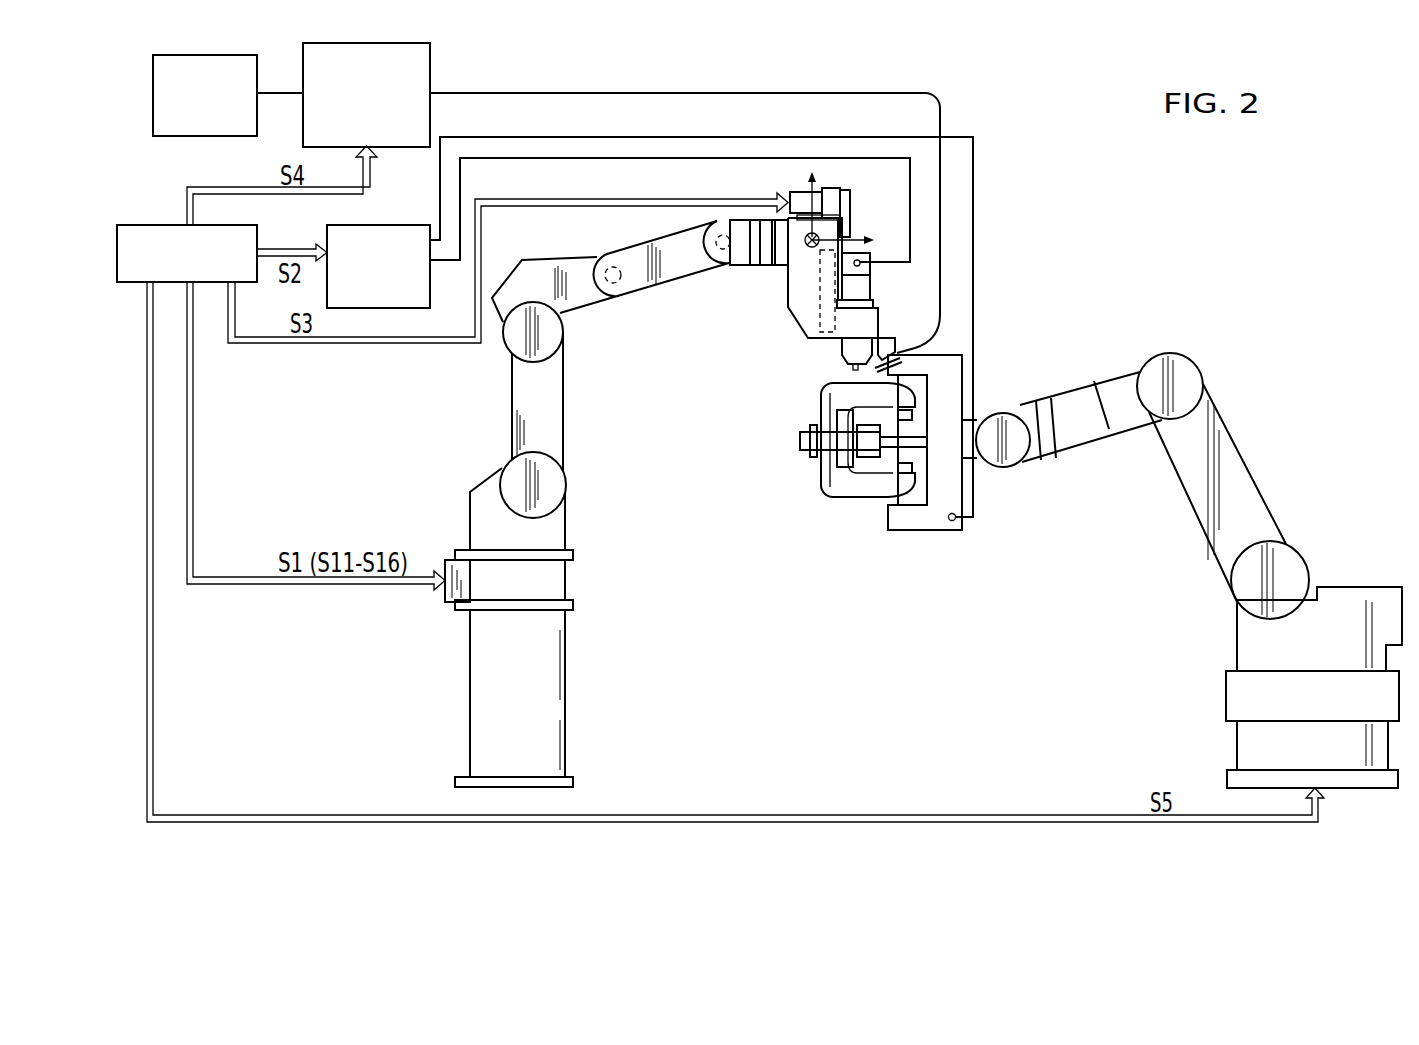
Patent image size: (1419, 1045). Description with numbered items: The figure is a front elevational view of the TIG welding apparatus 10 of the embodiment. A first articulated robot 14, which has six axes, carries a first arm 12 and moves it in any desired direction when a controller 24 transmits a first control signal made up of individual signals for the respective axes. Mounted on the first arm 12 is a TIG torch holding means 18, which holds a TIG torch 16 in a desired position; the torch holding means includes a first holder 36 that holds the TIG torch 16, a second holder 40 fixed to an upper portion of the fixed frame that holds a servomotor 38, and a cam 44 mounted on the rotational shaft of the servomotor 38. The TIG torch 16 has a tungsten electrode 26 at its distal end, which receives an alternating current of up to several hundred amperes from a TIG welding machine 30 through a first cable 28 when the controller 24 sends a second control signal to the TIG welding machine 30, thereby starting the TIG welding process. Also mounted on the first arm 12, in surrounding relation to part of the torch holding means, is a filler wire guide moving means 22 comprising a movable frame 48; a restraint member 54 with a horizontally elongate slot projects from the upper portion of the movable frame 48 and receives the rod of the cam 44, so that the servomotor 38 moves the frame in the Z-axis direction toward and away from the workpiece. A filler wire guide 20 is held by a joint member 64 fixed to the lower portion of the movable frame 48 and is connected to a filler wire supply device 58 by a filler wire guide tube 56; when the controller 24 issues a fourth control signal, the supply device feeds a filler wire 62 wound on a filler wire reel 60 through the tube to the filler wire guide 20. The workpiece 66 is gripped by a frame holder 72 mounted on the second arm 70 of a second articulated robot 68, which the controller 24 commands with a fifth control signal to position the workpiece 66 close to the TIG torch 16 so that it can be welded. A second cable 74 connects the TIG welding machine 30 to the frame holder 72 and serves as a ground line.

The TIG welding apparatus 10 is at (1108, 171).
The first arm 12 is at (674, 287).
The first articulated robot 14 is at (544, 522).
The TIG torch 16 is at (862, 283).
The TIG torch holding means 18 is at (848, 176).
The filler wire guide 20 is at (877, 368).
The filler wire guide moving means 22 is at (867, 247).
The controller 24 is at (243, 224).
The tungsten electrode 26 is at (842, 362).
The first cable 28 is at (447, 267).
The TIG welding machine 30 is at (380, 224).
The first holder 36 is at (873, 307).
The servomotor 38 is at (787, 193).
The second holder 40 is at (850, 224).
The cam 44 is at (850, 190).
The movable frame 48 is at (787, 302).
The restraint member 54 is at (850, 225).
The filler wire guide tube 56 is at (677, 93).
The filler wire supply device 58 is at (430, 46).
The filler wire reel 60 is at (247, 57).
The filler wire 62 is at (863, 372).
The joint member 64 is at (897, 347).
The workpiece 66 is at (808, 475).
The second articulated robot 68 is at (1189, 570).
The second arm 70 is at (1075, 429).
The frame holder 72 is at (927, 520).
The second cable 74 is at (973, 303).